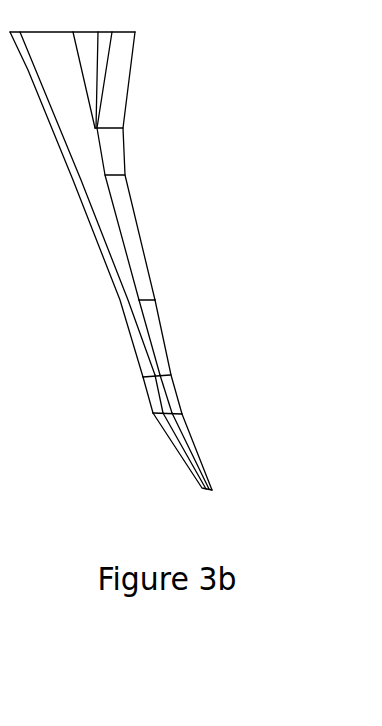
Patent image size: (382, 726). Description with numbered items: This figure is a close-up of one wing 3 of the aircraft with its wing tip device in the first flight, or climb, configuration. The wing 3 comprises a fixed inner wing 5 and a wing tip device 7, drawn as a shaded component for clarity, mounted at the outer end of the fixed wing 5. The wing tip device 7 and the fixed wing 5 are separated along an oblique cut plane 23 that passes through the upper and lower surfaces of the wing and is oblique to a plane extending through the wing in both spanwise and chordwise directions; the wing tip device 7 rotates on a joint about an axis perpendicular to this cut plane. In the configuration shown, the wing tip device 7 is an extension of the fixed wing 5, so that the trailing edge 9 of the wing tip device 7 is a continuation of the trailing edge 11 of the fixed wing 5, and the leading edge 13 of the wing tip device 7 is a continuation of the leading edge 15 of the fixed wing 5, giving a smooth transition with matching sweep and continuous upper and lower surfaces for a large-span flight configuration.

The wing 3 is at (177, 272).
The fixed inner wing 5 is at (132, 195).
The wing tip device 7 is at (195, 447).
The trailing edge of the wing tip device 9 is at (186, 440).
The trailing edge of the fixed wing 11 is at (172, 320).
The leading edge of the wing tip device 13 is at (175, 455).
The leading edge of the fixed wing 15 is at (122, 327).
The oblique cut plane 23 is at (153, 407).